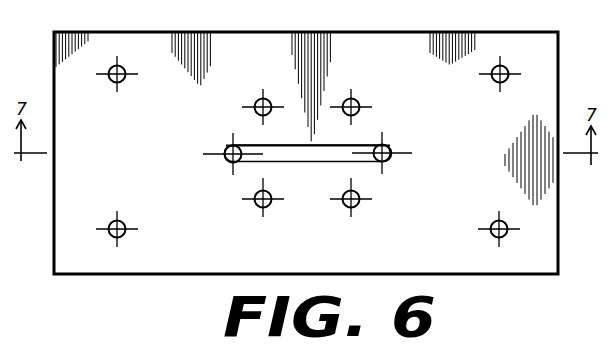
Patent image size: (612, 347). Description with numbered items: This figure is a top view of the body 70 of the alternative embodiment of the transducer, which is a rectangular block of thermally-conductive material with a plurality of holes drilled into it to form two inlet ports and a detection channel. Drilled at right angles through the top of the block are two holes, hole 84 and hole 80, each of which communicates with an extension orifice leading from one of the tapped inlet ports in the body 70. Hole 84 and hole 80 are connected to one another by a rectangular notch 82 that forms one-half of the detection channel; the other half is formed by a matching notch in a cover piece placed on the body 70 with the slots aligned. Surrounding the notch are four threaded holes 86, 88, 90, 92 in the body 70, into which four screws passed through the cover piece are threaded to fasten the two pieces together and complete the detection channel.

The body 70 is at (182, 260).
The hole 80 is at (384, 146).
The rectangular notch 82 is at (328, 153).
The hole 84 is at (233, 146).
The threaded hole 86 is at (262, 99).
The threaded hole 88 is at (355, 100).
The threaded hole 90 is at (259, 206).
The threaded hole 92 is at (357, 205).